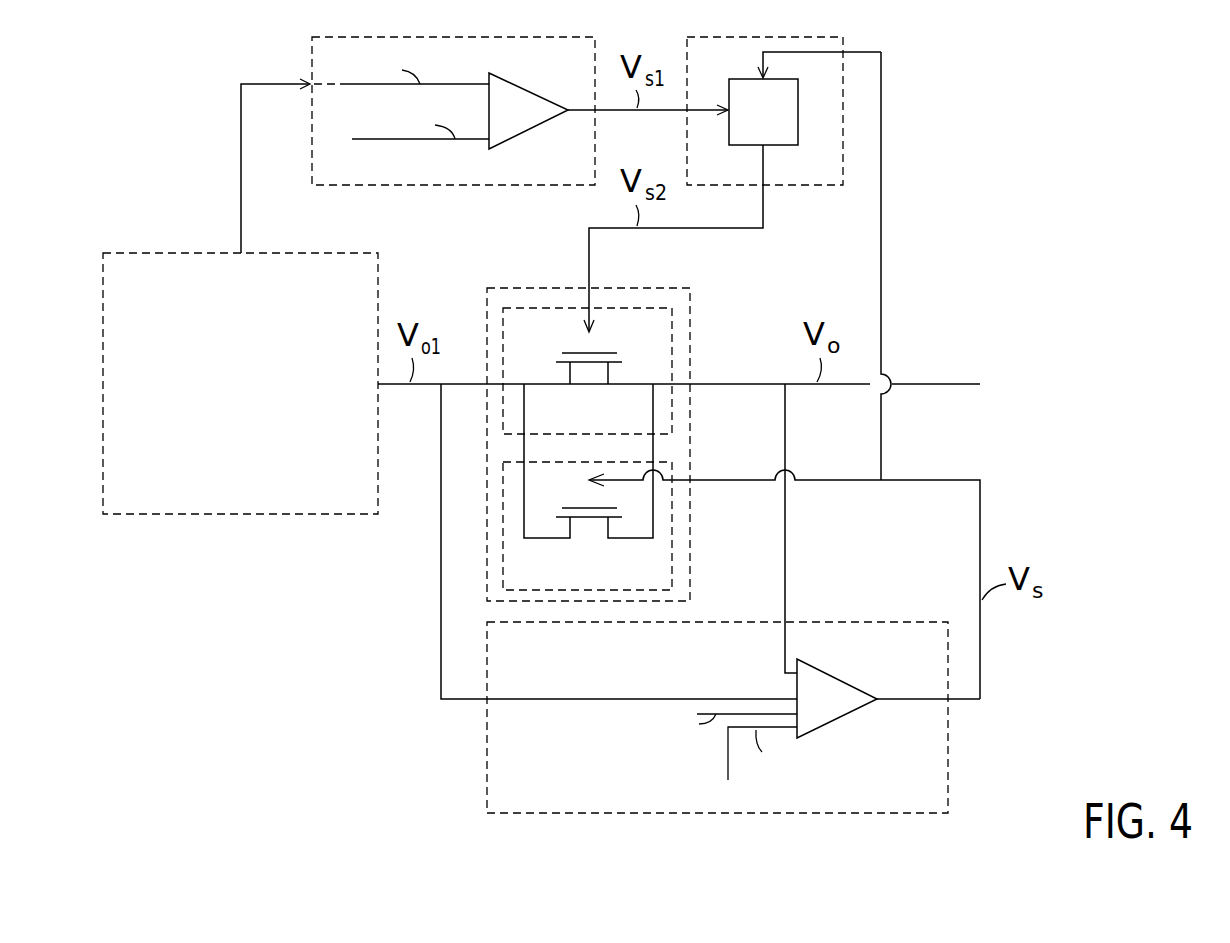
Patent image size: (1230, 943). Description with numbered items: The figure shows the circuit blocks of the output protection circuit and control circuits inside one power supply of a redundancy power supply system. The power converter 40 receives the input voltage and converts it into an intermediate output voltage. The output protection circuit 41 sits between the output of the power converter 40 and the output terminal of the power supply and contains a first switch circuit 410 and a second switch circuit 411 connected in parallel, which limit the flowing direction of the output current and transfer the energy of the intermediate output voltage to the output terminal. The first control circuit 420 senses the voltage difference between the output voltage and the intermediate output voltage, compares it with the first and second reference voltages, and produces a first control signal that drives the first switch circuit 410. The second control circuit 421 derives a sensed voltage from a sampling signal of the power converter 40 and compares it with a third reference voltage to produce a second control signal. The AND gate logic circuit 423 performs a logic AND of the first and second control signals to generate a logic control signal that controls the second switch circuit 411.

The power converter 40 is at (104, 313).
The output protection circuit 41 is at (543, 288).
The first switch circuit 410 is at (672, 552).
The second switch circuit 411 is at (672, 370).
The first control circuit 420 is at (948, 766).
The second control circuit 421 is at (311, 55).
The AND gate logic circuit 423 is at (763, 37).